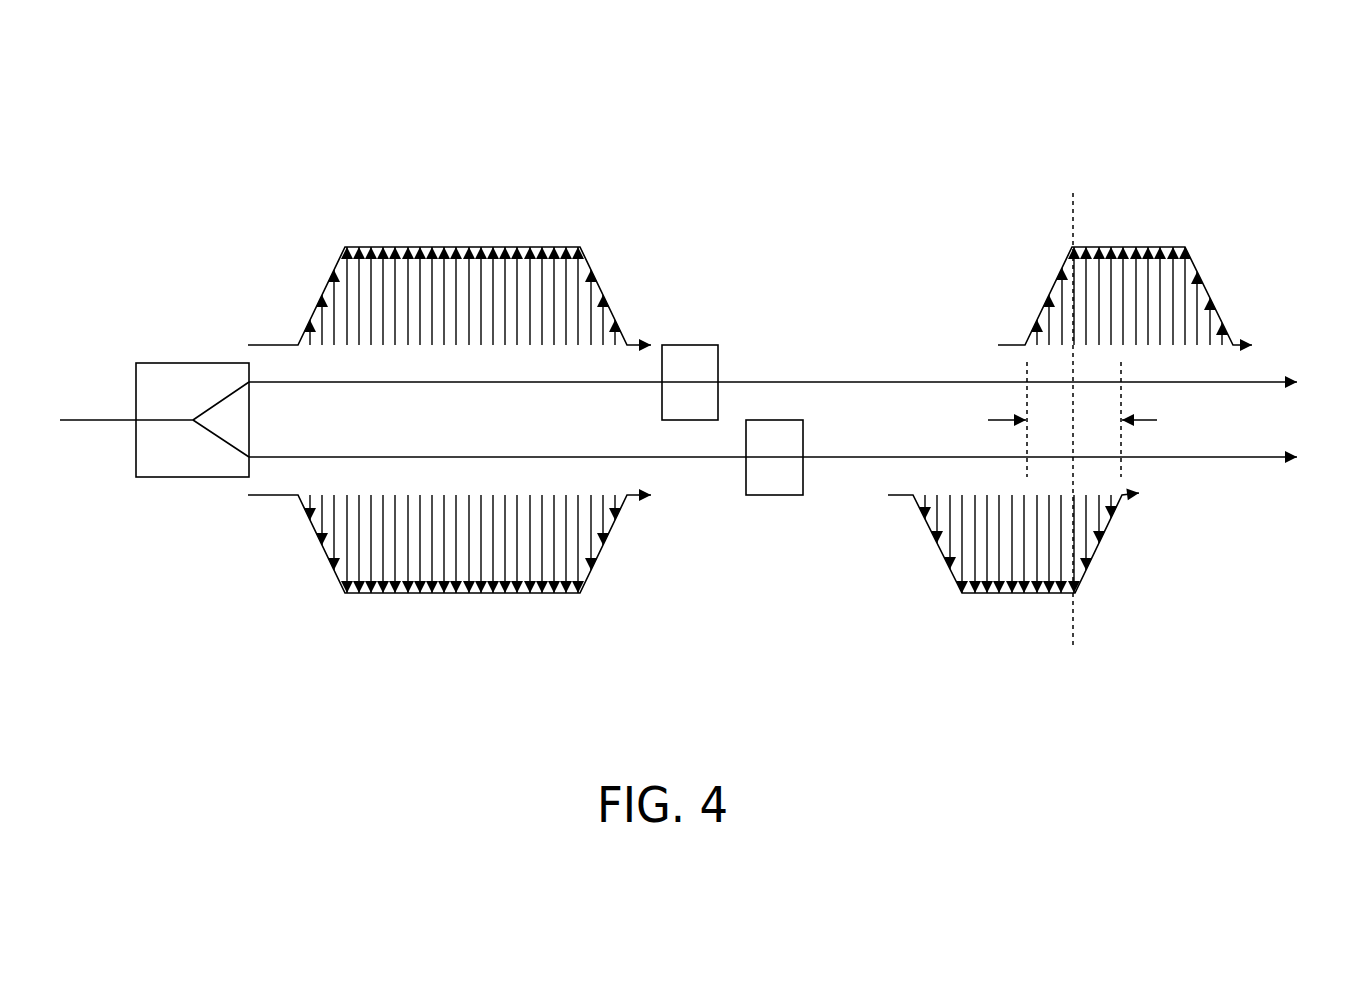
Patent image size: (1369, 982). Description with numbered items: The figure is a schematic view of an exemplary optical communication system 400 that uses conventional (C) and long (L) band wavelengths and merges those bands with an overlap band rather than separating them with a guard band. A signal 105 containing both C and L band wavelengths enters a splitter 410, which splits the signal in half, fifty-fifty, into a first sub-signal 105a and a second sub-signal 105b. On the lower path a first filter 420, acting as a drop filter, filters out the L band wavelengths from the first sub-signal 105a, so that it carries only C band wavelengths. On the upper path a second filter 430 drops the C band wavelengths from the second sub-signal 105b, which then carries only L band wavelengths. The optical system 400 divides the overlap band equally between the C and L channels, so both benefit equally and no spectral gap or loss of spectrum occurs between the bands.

The optical system 400 is at (967, 98).
The signal 105 is at (80, 417).
The first sub-signal 105a is at (853, 454).
The second sub-signal 105b is at (885, 379).
The splitter 410 is at (187, 363).
The first filter 420 is at (746, 478).
The second filter 430 is at (718, 358).